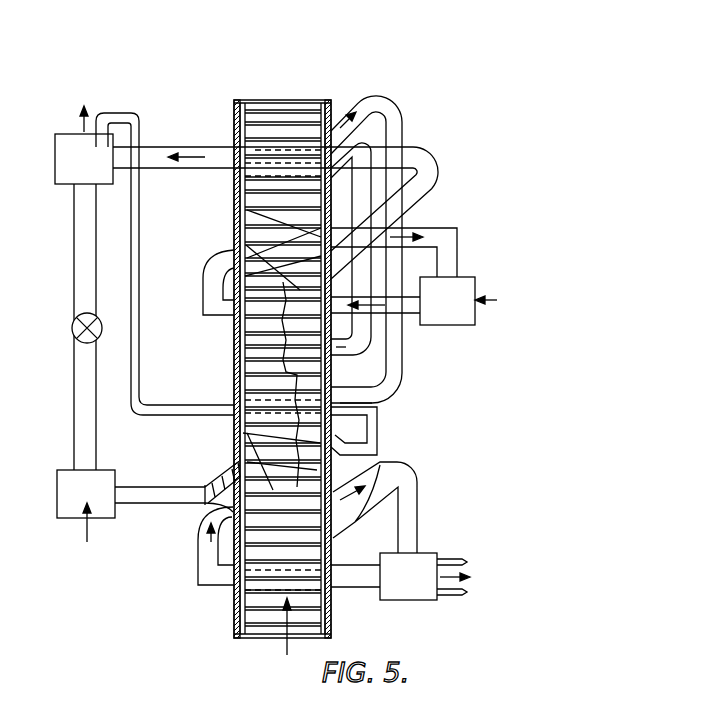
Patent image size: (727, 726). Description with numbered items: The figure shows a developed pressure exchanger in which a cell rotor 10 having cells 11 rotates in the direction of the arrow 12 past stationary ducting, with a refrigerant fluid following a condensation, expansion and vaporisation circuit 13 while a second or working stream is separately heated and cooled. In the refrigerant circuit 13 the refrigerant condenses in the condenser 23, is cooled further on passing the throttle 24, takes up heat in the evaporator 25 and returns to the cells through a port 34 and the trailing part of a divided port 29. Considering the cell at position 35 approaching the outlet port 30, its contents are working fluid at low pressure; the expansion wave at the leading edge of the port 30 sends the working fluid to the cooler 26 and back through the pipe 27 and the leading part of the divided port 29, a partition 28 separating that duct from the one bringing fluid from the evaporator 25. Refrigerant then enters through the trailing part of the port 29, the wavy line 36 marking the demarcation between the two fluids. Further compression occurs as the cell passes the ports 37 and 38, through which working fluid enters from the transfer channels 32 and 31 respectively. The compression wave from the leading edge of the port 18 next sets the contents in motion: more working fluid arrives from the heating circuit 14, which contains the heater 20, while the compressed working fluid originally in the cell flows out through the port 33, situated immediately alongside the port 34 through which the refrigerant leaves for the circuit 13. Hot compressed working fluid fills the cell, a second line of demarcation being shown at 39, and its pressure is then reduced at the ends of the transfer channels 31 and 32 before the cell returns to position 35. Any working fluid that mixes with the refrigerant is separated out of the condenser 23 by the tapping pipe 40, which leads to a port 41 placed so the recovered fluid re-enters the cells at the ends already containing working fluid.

The pressure exchanger cell rotor 10 is at (333, 614).
The cells 11 is at (262, 605).
The arrow 12 is at (284, 645).
The circuit 13 is at (168, 147).
The heating circuit 14 is at (458, 233).
The port 18 is at (220, 263).
The heater 20 is at (427, 301).
The condenser 23 is at (84, 136).
The throttle 24 is at (72, 327).
The evaporator 25 is at (86, 516).
The cooler 26 is at (447, 576).
The pipe 27 is at (215, 520).
The partition 28 is at (205, 490).
The divided port 29 is at (238, 470).
The outlet port 30 is at (370, 470).
The transfer channel 31 is at (363, 143).
The transfer channel 32 is at (386, 104).
The port 33 is at (345, 258).
The port 34 is at (247, 211).
The cell position 35 is at (337, 556).
The wavy line 36 is at (250, 440).
The port 37 is at (363, 403).
The port 38 is at (345, 343).
The second line of demarcation 39 is at (246, 244).
The tapping pipe 40 is at (140, 203).
The port 41 is at (340, 440).